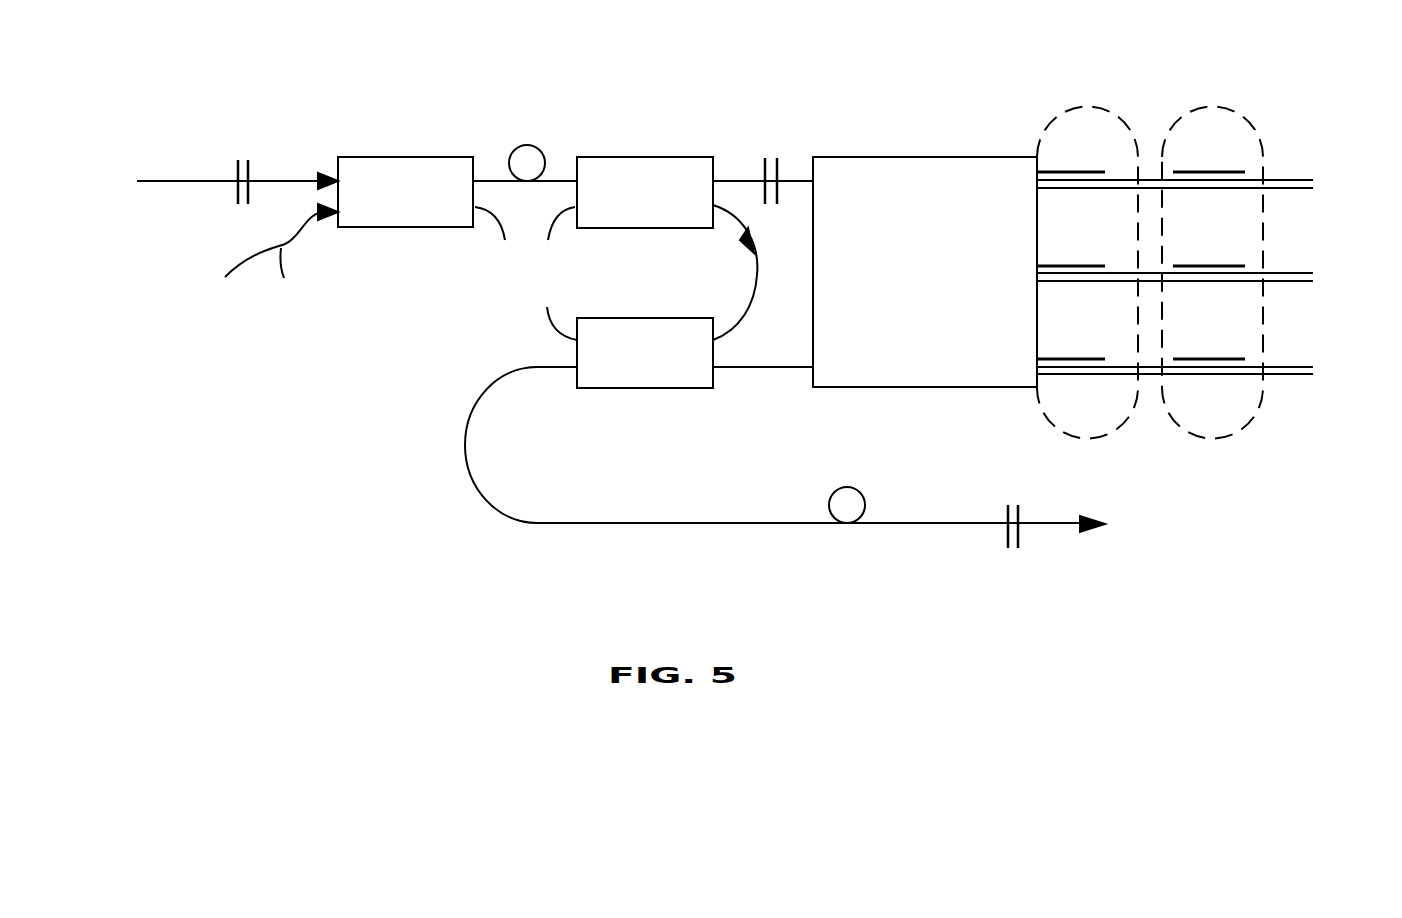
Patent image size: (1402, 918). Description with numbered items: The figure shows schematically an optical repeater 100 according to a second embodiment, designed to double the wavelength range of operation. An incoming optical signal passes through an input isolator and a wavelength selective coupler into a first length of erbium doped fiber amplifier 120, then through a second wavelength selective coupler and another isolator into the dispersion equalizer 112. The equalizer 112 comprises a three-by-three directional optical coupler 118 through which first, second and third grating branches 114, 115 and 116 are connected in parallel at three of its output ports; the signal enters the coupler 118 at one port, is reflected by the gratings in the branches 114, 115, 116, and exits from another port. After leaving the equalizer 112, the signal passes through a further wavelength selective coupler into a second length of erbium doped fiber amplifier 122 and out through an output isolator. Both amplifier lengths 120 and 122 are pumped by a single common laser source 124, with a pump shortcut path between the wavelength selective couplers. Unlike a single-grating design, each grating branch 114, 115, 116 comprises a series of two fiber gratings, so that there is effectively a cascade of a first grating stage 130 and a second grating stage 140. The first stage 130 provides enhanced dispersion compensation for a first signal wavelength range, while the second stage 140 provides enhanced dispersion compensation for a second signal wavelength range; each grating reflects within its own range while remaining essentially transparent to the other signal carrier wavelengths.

The optical repeater 100 is at (731, 314).
The dispersion equalizer 112 is at (900, 117).
The first grating branch 114 is at (1293, 178).
The second grating branch 115 is at (1293, 272).
The third grating branch 116 is at (1293, 366).
The directional optical coupler 118 is at (812, 378).
The first length of erbium doped fiber amplifier 120 is at (510, 160).
The second length of erbium doped fiber amplifier 122 is at (830, 499).
The laser source 124 is at (265, 256).
The first grating stage 130 is at (1044, 130).
The second grating stage 140 is at (1258, 136).